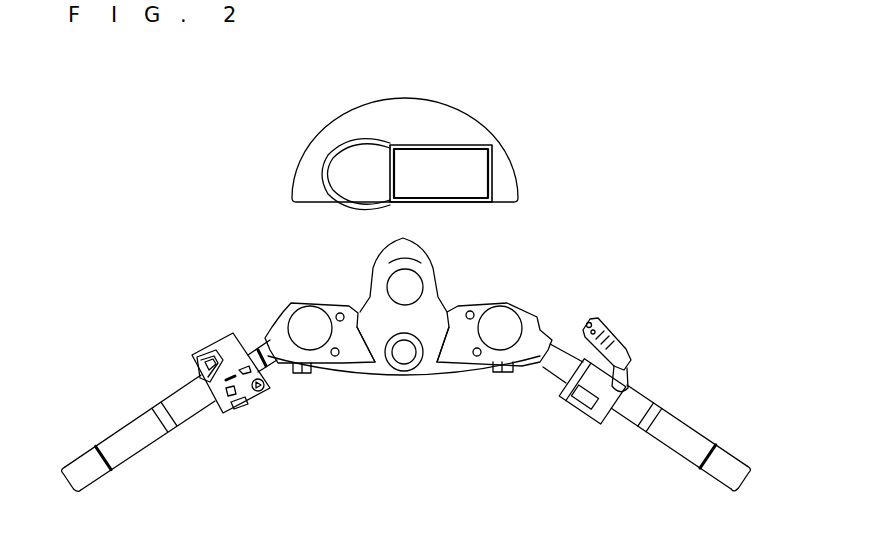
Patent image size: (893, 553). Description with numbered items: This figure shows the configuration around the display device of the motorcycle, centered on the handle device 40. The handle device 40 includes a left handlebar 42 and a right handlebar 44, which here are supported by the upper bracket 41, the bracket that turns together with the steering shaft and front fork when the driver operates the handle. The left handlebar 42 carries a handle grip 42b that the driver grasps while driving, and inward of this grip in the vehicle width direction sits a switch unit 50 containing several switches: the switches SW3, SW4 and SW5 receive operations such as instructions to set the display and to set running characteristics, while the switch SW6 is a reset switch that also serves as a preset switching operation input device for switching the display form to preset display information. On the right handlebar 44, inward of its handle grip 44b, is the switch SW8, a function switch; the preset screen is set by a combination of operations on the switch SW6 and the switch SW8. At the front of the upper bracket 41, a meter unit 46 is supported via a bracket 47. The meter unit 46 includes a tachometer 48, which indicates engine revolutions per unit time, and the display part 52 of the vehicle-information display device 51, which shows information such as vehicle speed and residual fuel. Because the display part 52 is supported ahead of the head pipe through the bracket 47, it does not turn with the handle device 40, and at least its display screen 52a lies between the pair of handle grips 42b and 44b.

The handle device 40 is at (543, 253).
The upper bracket 41 is at (430, 363).
The left handlebar 42 is at (169, 353).
The handle grip 42b is at (137, 438).
The right handlebar 44 is at (630, 422).
The handle grip 44b is at (675, 447).
The meter unit 46 is at (426, 161).
The bracket 47 is at (447, 113).
The tachometer 48 is at (359, 183).
The left switch unit 50 is at (199, 317).
The vehicle-information display device 51 is at (484, 208).
The display part 52 is at (475, 203).
The display screen 52a is at (450, 187).
The switch SW3 is at (194, 362).
The switch SW4 is at (203, 355).
The switch SW5 is at (211, 355).
The reset switch SW6 is at (247, 374).
The function switch SW8 is at (563, 403).